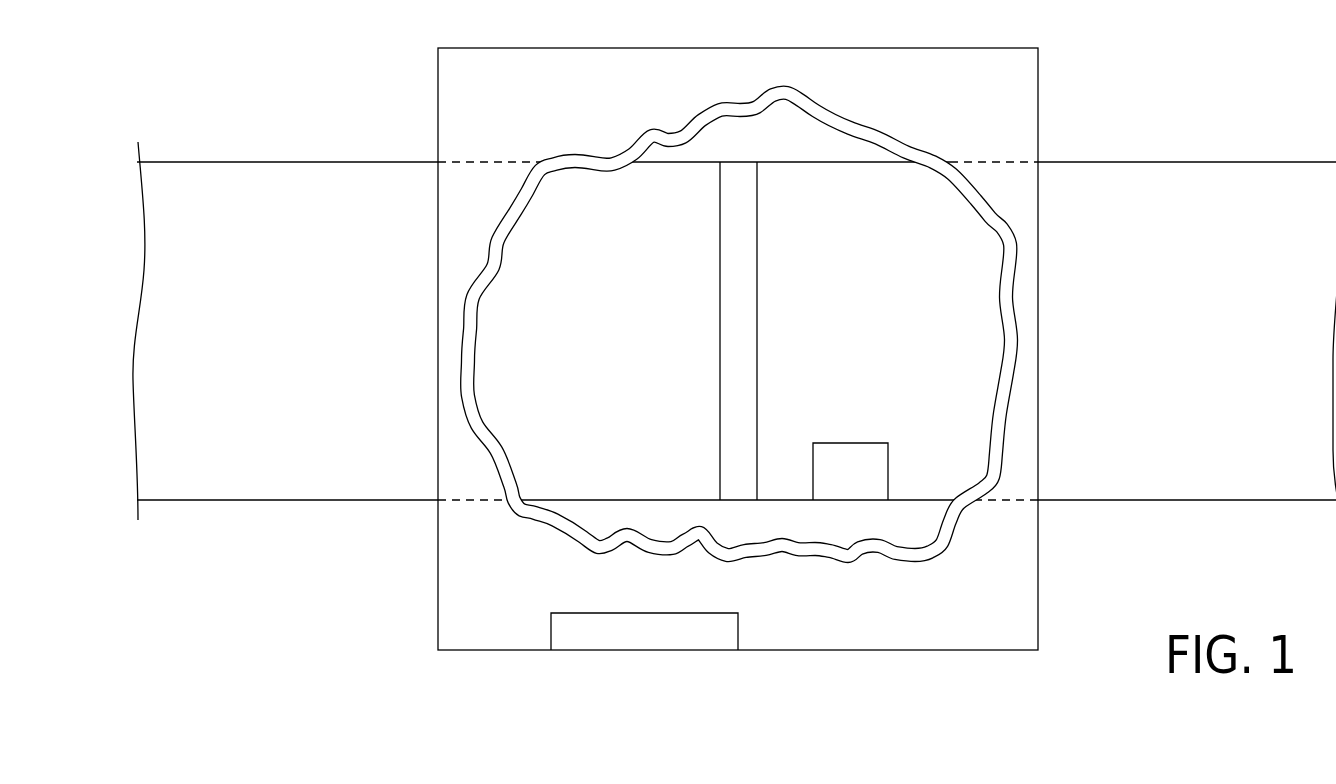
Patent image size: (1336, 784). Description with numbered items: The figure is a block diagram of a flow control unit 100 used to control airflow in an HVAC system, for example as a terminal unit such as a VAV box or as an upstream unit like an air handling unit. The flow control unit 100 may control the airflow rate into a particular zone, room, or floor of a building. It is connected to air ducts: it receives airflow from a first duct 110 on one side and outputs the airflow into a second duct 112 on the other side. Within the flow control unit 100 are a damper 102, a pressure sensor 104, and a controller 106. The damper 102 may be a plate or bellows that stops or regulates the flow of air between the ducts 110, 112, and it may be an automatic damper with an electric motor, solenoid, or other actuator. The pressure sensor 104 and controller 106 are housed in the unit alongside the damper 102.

The flow control unit 100 is at (850, 68).
The damper 102 is at (747, 228).
The pressure sensor 104 is at (868, 453).
The controller 106 is at (718, 641).
The first duct 110 is at (288, 182).
The second duct 112 is at (1188, 182).